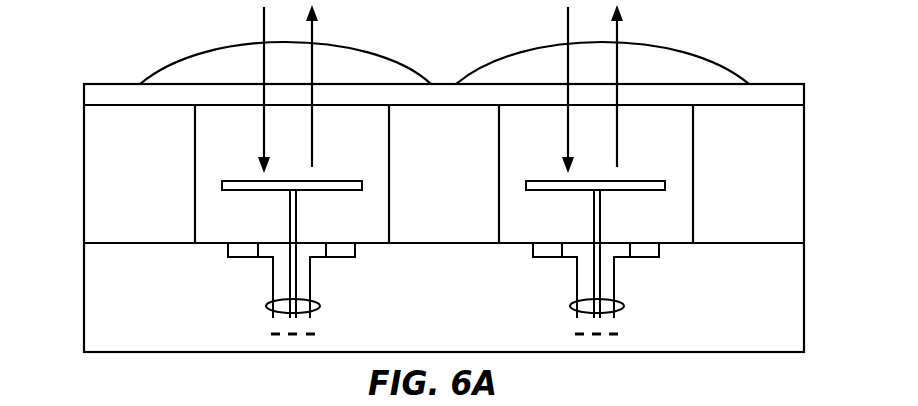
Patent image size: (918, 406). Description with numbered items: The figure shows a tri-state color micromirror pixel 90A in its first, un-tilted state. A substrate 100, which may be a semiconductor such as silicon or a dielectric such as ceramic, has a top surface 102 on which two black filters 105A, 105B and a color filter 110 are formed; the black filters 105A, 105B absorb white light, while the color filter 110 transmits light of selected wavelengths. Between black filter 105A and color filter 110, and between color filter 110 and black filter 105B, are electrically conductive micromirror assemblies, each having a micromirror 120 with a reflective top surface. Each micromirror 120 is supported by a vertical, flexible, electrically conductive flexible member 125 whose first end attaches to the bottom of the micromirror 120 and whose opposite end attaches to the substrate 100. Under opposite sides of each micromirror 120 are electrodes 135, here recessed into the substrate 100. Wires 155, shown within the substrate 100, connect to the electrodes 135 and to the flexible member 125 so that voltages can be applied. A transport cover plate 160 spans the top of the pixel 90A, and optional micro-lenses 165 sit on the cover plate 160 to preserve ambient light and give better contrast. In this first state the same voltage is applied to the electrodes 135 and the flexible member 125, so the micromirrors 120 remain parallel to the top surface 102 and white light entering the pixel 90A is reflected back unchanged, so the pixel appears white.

The micromirror pixel 90A is at (822, 110).
The substrate 100 is at (784, 346).
The top surface 102 is at (177, 243).
The black filter 105A is at (160, 176).
The black filter 105B is at (762, 176).
The color filter 110 is at (458, 168).
The micromirror 120 is at (237, 181).
The flexible member 125 is at (297, 216).
The electrodes 135 is at (244, 248).
The wires 155 is at (320, 306).
The transport cover plate 160 is at (98, 99).
The micro-lenses 165 is at (224, 80).